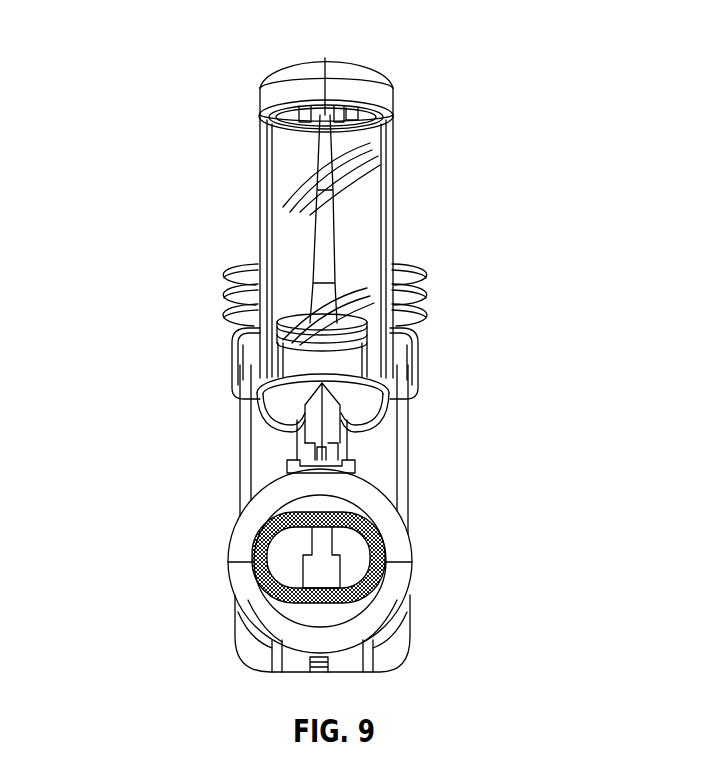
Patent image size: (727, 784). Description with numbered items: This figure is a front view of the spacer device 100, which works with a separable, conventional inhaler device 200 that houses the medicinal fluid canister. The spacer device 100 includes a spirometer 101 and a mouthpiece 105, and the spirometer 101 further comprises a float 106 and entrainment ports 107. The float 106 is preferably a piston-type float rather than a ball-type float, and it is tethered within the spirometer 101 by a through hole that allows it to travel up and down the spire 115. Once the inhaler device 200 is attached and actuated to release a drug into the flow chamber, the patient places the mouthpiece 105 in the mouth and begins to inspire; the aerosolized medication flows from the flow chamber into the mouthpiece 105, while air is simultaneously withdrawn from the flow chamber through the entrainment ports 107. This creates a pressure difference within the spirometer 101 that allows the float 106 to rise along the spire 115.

The spacer device 100 is at (126, 60).
The spirometer 101 is at (362, 170).
The spire 115 is at (318, 238).
The float 106 is at (348, 355).
The entrainment ports 107 is at (265, 398).
The inhaler device 200 is at (408, 413).
The mouthpiece 105 is at (382, 568).